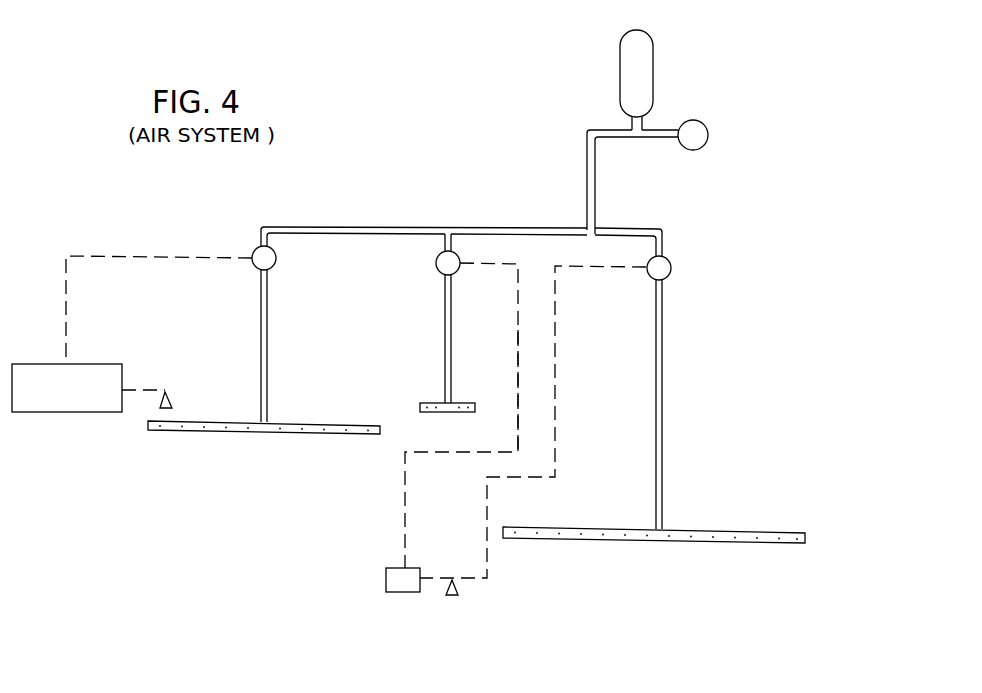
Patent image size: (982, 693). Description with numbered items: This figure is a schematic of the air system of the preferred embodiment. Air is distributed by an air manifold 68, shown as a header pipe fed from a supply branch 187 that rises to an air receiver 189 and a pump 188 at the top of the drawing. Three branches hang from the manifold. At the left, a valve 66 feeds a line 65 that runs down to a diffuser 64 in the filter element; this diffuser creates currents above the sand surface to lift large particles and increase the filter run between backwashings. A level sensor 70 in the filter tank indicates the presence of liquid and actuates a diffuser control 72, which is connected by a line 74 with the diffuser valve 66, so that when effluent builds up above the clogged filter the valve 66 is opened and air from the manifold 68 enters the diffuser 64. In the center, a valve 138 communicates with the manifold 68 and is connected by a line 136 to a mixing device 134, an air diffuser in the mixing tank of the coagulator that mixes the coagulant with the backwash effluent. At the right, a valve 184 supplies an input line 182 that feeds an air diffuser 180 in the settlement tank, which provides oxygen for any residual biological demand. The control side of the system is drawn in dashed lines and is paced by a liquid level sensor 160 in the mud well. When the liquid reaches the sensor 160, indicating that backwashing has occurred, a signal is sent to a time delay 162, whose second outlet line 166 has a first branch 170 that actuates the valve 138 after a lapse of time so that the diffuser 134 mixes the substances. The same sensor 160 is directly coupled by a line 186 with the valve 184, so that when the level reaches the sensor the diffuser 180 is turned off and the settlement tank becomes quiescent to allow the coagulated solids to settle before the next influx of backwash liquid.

The air receiver tank 189 is at (651, 55).
The air pump / compressor 188 is at (708, 135).
The air supply pipe 187 is at (595, 186).
The air manifold 68 is at (400, 229).
The valve 66 is at (276, 258).
The line 65 is at (267, 330).
The diffuser 64 is at (305, 421).
The line 74 is at (155, 256).
The diffuser control 72 is at (106, 364).
The level sensor 70 is at (177, 402).
The valve 138 is at (437, 272).
The line 136 is at (444, 320).
The mixing device 134 is at (447, 412).
The first branch 170 is at (503, 264).
The second outlet line 166 is at (517, 384).
The line 186 is at (556, 395).
The valve 184 is at (671, 262).
The input line 182 is at (663, 365).
The air diffuser 180 is at (715, 527).
The time delay 162 is at (391, 568).
The liquid level sensor 160 is at (452, 596).